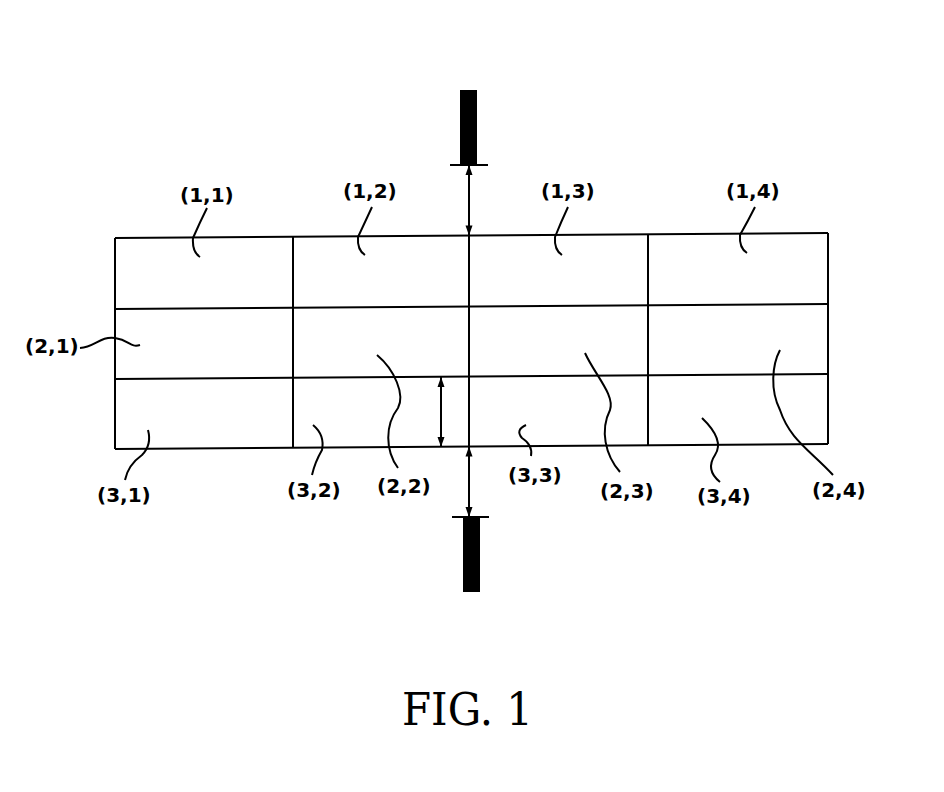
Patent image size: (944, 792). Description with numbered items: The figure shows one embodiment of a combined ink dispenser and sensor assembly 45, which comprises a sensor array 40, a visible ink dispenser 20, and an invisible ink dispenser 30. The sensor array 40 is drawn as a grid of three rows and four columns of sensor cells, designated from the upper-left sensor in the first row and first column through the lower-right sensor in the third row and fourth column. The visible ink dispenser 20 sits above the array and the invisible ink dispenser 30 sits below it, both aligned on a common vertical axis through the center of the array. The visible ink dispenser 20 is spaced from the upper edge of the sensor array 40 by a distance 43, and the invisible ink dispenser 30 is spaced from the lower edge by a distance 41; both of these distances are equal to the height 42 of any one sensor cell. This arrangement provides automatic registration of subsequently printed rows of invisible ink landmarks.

The visible ink dispenser 20 is at (478, 130).
The invisible ink dispenser 30 is at (480, 553).
The sensor array 40 is at (843, 233).
The distance 41 is at (470, 485).
The height 42 is at (441, 407).
The distance 43 is at (470, 200).
The combined ink dispenser and sensor assembly 45 is at (731, 125).